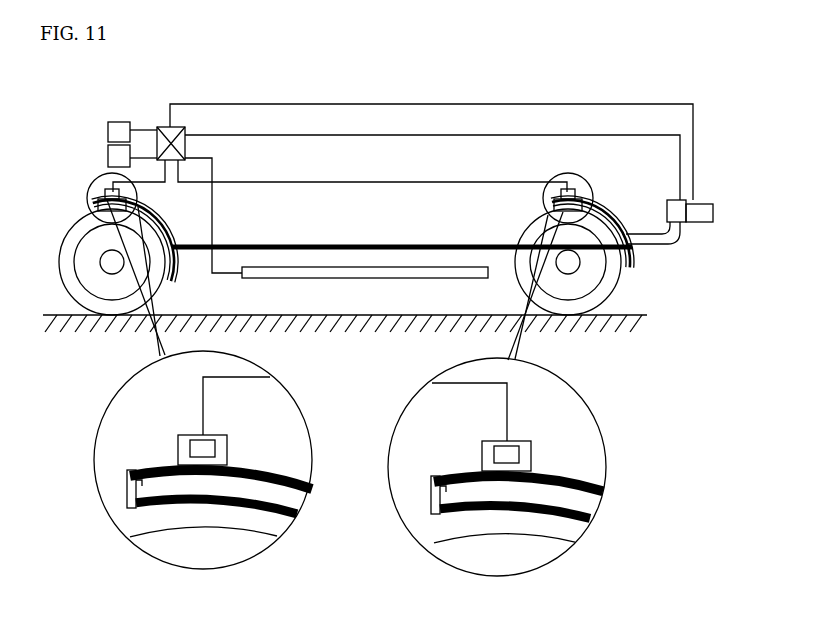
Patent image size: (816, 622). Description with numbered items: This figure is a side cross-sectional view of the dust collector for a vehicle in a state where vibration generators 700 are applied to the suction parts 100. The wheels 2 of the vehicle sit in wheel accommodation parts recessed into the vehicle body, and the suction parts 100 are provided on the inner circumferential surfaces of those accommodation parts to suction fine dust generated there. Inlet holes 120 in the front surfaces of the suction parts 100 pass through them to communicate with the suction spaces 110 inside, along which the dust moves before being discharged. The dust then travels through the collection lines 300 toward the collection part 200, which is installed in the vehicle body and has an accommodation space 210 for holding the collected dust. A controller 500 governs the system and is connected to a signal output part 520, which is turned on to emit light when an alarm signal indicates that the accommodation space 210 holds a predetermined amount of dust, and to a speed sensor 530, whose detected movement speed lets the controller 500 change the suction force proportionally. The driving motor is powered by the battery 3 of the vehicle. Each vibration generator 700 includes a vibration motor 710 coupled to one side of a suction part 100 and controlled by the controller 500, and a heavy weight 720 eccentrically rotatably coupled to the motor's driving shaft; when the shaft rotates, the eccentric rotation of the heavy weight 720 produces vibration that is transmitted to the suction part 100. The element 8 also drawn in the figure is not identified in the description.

The wheels 2 is at (102, 315).
The battery 3 is at (340, 279).
The rim 8 is at (262, 470).
The suction parts 100 is at (126, 498).
The suction spaces 110 is at (138, 468).
The inlet holes 120 is at (160, 532).
The collection part 200 is at (704, 197).
The accommodation space 210 is at (713, 213).
The collection lines 300 is at (300, 250).
The controller 500 is at (160, 126).
The signal output part 520 is at (108, 156).
The speed sensor 530 is at (108, 129).
The vibration generator 700 is at (228, 445).
The vibration motor 710 is at (191, 434).
The heavy weight 720 is at (178, 453).